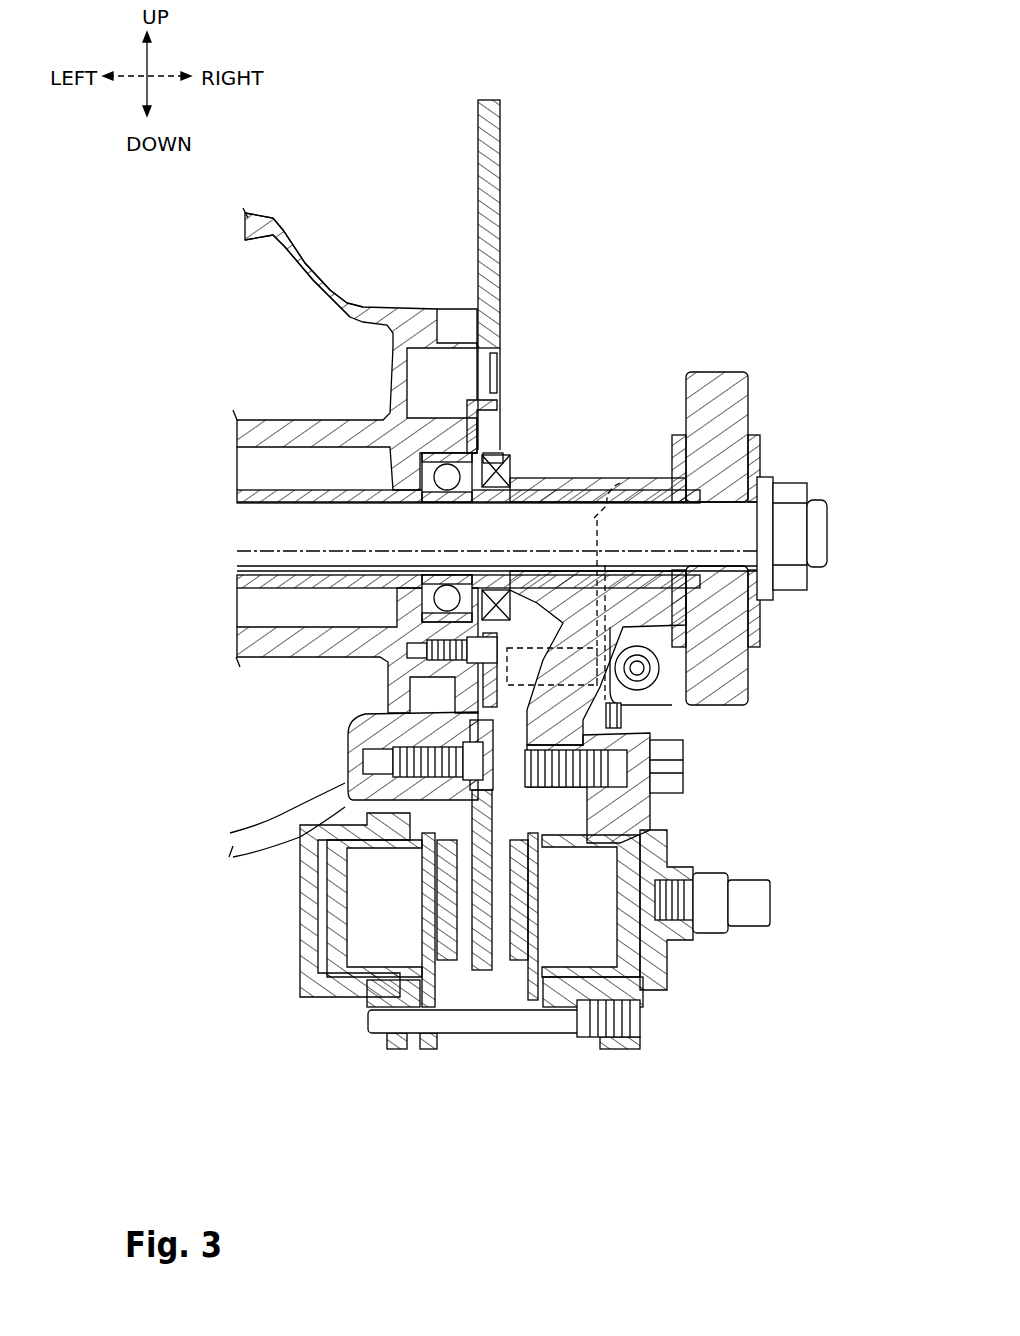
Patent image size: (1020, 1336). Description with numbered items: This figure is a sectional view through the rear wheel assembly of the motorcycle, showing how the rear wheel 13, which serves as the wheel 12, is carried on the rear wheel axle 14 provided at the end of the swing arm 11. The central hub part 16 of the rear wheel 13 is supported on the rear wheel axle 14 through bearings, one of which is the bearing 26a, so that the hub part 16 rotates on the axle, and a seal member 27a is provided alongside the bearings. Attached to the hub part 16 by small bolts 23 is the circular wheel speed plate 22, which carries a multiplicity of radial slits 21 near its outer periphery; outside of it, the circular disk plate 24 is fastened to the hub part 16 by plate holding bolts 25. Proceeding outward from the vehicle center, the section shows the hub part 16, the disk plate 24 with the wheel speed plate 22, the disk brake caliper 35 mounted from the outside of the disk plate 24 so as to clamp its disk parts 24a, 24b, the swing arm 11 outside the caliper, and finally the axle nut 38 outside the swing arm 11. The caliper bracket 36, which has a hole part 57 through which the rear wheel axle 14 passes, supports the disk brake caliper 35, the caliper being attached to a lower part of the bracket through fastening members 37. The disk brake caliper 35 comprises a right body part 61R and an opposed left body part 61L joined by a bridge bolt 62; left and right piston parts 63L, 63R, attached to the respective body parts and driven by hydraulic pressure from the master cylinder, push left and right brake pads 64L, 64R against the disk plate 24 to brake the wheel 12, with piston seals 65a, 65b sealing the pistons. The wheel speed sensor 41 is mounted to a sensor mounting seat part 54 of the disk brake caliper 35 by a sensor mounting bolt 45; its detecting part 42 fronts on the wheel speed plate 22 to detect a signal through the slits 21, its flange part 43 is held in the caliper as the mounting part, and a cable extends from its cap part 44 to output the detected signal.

The swing arm 11 is at (712, 388).
The wheel 12 is at (309, 196).
The rear wheel 13 is at (290, 210).
The rear wheel axle 14 is at (262, 535).
The hub part 16 is at (290, 645).
The slits 21 is at (497, 380).
The wheel speed plate 22 is at (492, 346).
The small bolts 23 is at (425, 668).
The disk plate 24 is at (498, 500).
The disk part 24a is at (500, 138).
The disk part 24b is at (478, 138).
The plate holding bolts 25 is at (380, 762).
The bearing 26a is at (500, 452).
The seal member 27a is at (505, 478).
The disk brake caliper 35 is at (486, 972).
The caliper bracket 36 is at (628, 478).
The fastening members 37 is at (690, 778).
The axle nut 38 is at (785, 490).
The wheel speed sensor 41 is at (637, 701).
The detecting part 42 is at (455, 680).
The flange part 43 is at (621, 712).
The cap part 44 is at (660, 670).
The sensor mounting bolt 45 is at (668, 752).
The sensor mounting seat part 54 is at (672, 616).
The hole part 57 is at (598, 478).
The left body part 61L is at (313, 980).
The right body part 61R is at (647, 983).
The bridge bolt 62 is at (487, 1022).
The left piston part 63L is at (332, 940).
The right piston part 63R is at (627, 955).
The left brake pad 64L is at (432, 1000).
The right brake pad 64R is at (515, 975).
The piston seal 65a is at (378, 990).
The piston seal 65b is at (445, 965).